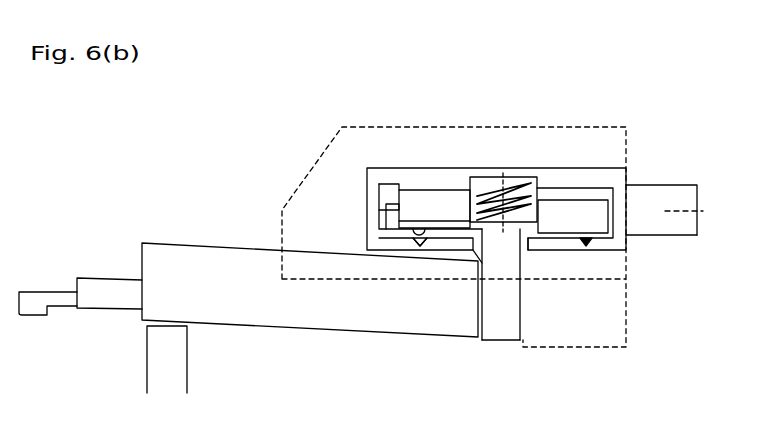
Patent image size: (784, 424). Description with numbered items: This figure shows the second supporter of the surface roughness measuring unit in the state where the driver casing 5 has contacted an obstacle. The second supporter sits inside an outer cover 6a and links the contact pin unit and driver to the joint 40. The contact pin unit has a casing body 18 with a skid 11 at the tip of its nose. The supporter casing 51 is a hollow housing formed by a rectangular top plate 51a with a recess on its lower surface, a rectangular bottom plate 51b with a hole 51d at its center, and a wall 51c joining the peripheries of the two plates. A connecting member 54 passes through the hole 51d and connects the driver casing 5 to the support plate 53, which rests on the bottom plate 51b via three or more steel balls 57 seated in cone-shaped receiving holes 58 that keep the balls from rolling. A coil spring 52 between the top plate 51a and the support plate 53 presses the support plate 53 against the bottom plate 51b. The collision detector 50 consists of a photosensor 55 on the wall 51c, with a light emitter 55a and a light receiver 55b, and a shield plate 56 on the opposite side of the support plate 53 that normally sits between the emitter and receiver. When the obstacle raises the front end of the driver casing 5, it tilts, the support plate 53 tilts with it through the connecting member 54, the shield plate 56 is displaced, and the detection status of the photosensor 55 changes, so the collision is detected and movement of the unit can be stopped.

The driver casing 5 is at (247, 326).
The outer cover 6a is at (302, 172).
The skid 11 is at (40, 316).
The casing body 18 is at (100, 309).
The joint 40 is at (665, 237).
The collision detector 50 is at (386, 204).
The supporter casing 51 is at (586, 168).
The top plate 51a is at (626, 168).
The bottom plate 51b is at (605, 251).
The wall 51c is at (643, 186).
The hole 51d is at (482, 262).
The coil spring 52 is at (518, 178).
The support plate 53 is at (558, 238).
The connecting member 54 is at (510, 340).
The photosensor 55 is at (378, 192).
The light emitter 55a is at (338, 164).
The light receiver 55b is at (380, 173).
The shield plate 56 is at (397, 190).
The steel balls 57 is at (421, 228).
The receiving holes 58 is at (418, 235).